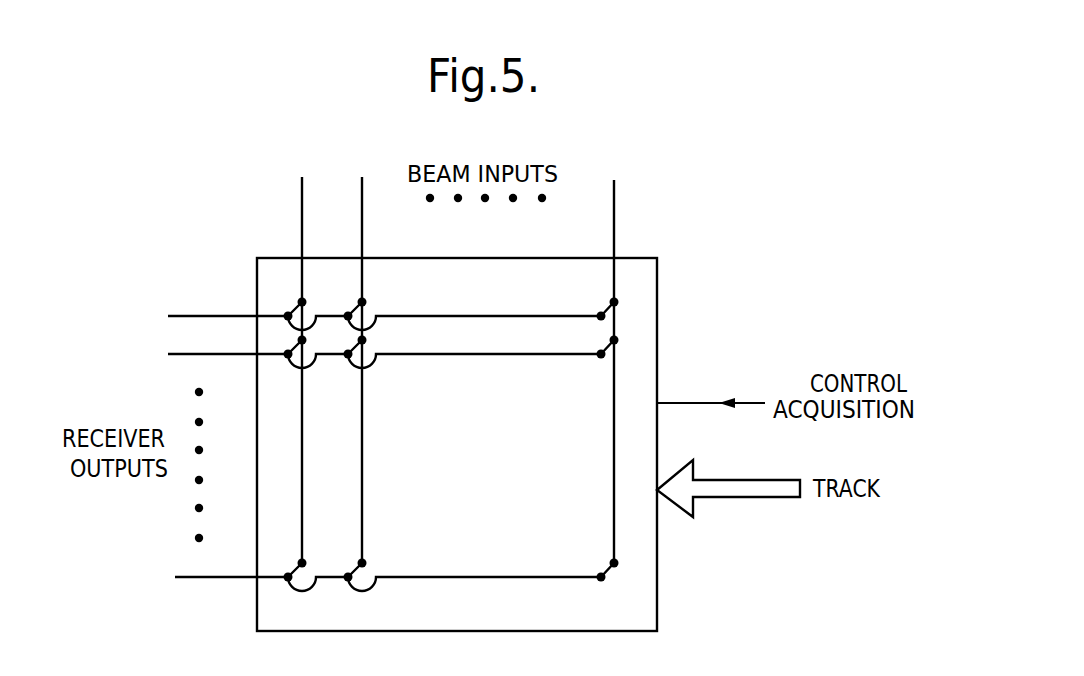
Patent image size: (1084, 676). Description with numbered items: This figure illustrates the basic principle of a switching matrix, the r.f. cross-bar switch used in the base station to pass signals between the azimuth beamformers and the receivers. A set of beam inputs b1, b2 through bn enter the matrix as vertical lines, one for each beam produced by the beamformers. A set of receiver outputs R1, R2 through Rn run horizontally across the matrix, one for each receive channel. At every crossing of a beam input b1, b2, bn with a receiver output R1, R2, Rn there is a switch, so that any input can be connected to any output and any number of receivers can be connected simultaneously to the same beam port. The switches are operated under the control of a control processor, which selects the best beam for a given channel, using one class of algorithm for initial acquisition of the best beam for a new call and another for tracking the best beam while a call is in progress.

The beam input 1 b1 is at (302, 353).
The beam input 2 b2 is at (360, 353).
The beam input n bn is at (610, 353).
The receiver output 1 R1 is at (376, 314).
The receiver output 2 R2 is at (376, 352).
The receiver output n Rn is at (376, 576).